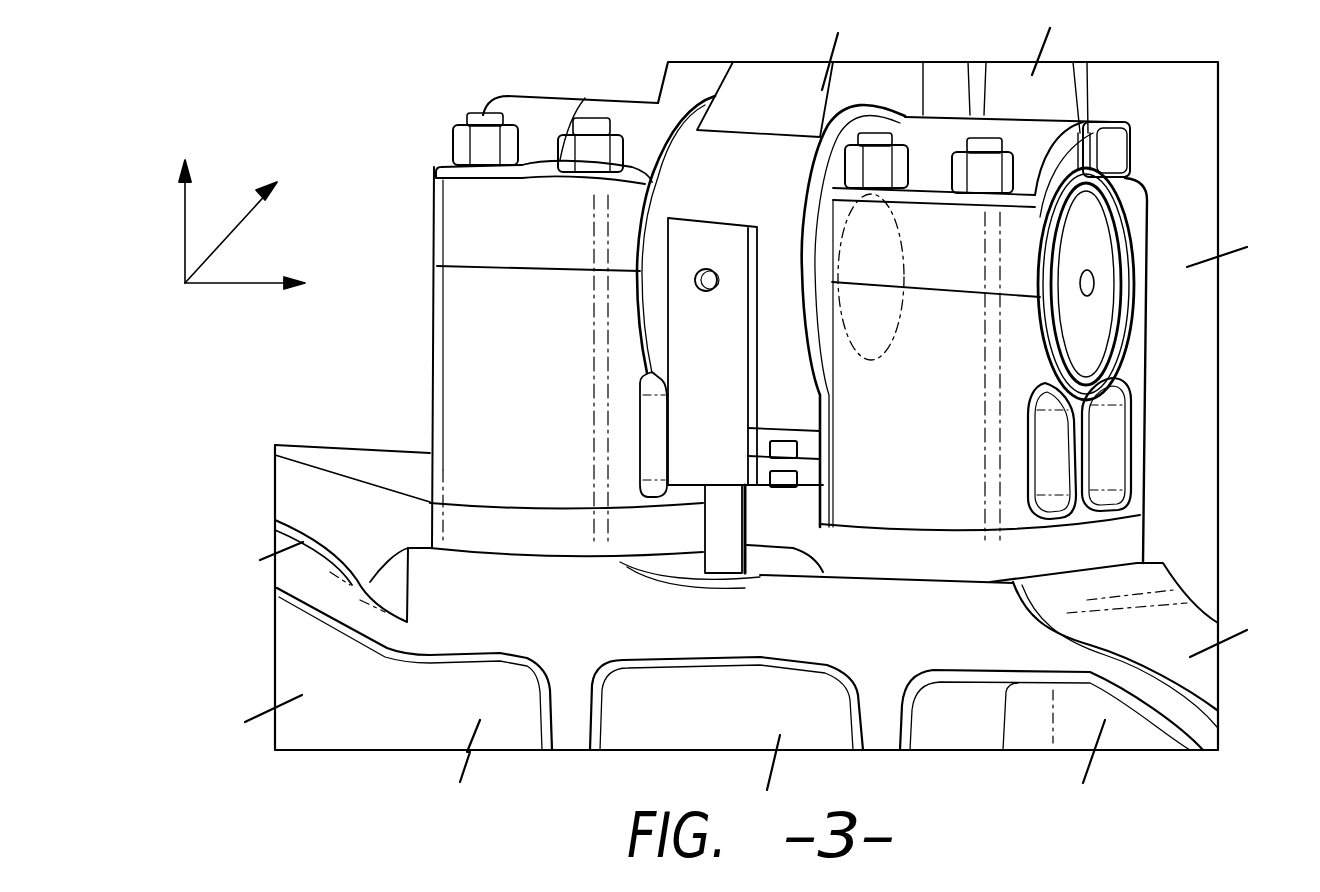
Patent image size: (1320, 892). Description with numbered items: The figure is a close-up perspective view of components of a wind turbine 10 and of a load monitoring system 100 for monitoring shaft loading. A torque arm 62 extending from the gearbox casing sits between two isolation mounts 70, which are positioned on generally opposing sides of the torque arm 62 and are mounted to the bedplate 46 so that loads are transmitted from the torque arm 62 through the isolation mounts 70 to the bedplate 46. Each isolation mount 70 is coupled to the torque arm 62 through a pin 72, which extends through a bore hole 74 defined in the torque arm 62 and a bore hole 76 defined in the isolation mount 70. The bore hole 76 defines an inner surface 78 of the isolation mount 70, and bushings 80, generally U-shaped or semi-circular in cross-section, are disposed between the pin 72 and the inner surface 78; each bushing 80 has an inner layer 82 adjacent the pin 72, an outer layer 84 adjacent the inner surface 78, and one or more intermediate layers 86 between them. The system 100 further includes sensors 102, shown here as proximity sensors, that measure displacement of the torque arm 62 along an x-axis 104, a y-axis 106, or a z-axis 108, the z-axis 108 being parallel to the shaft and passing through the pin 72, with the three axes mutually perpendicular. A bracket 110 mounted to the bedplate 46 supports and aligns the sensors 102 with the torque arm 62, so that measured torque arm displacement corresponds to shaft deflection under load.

The wind turbine 10 is at (360, 112).
The bedplate 46 is at (880, 640).
The torque arm 62 is at (768, 153).
The isolation mount 70 is at (457, 317).
The pin 72 is at (1095, 313).
The bore hole 74 is at (885, 362).
The bore hole 76 is at (1035, 310).
The inner surface 78 is at (1115, 360).
The bushing 80 is at (1118, 200).
The inner layer 82 is at (1081, 130).
The outer layer 84 is at (1105, 168).
The intermediate layer 86 is at (1127, 140).
The load monitoring system 100 is at (468, 404).
The sensor 102 is at (703, 277).
The x-axis 104 is at (246, 210).
The y-axis 106 is at (182, 218).
The z-axis 108 is at (257, 283).
The bracket 110 is at (693, 433).